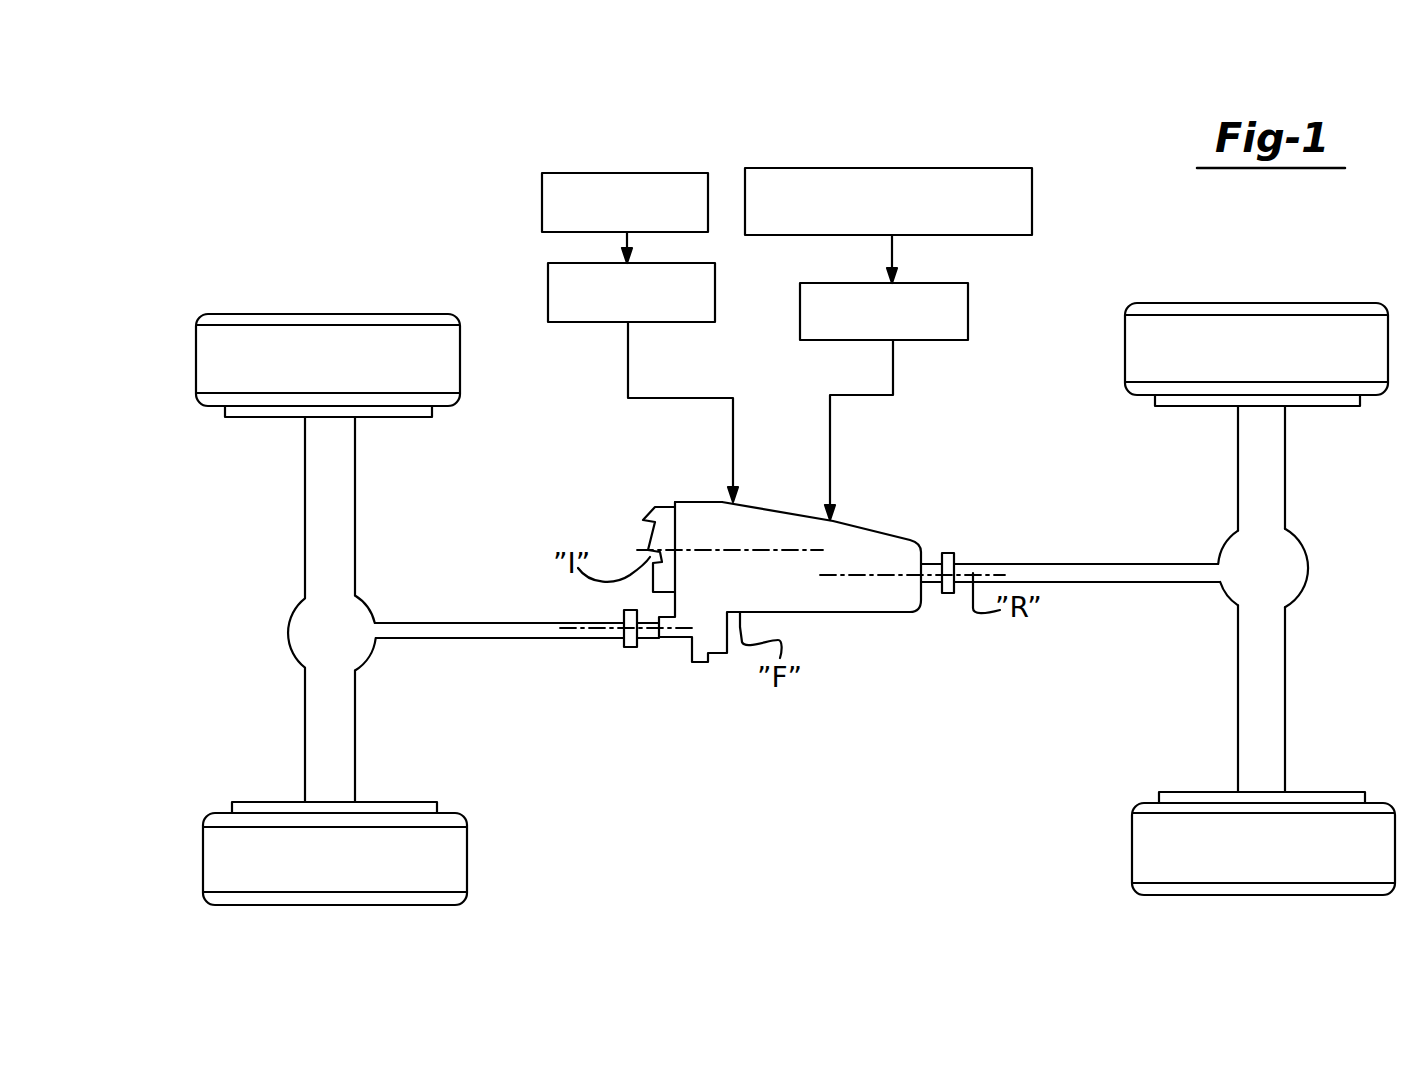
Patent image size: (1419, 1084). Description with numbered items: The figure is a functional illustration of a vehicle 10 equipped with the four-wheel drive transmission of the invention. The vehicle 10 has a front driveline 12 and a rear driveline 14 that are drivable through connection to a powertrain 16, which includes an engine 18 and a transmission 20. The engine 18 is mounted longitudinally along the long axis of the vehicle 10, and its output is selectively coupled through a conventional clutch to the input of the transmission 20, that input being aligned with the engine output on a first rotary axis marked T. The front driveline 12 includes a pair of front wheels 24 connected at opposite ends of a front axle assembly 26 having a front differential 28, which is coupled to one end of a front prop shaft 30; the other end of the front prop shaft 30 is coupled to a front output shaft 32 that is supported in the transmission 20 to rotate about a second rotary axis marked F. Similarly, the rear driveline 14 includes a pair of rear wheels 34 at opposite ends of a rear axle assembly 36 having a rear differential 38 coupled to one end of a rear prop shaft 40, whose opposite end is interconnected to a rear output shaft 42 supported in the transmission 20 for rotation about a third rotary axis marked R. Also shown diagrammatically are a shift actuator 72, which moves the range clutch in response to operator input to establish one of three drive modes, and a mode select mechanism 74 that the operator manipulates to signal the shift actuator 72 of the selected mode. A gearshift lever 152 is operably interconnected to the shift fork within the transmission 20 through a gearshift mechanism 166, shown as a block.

The vehicle 10 is at (1058, 178).
The front driveline 12 is at (380, 597).
The rear driveline 14 is at (1150, 525).
The powertrain 16 is at (657, 493).
The engine 18 is at (652, 521).
The transmission 20 is at (883, 613).
The front wheels 24 is at (258, 357).
The front axle assembly 26 is at (322, 498).
The front differential 28 is at (312, 612).
The front prop shaft 30 is at (593, 632).
The front output shaft 32 is at (643, 637).
The rear wheels 34 is at (1200, 363).
The rear axle assembly 36 is at (1256, 455).
The rear differential 38 is at (1277, 562).
The rear prop shaft 40 is at (1149, 570).
The rear output shaft 42 is at (932, 555).
The shift actuator 72 is at (968, 300).
The mode select mechanism 74 is at (960, 168).
The gearshift lever 152 is at (688, 173).
The gearshift mechanism 166 is at (715, 287).